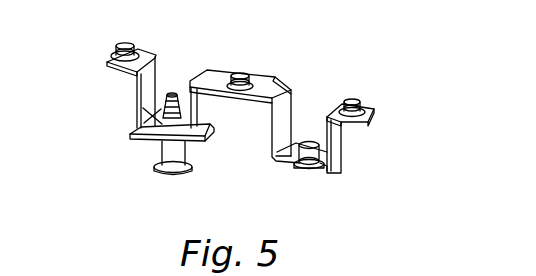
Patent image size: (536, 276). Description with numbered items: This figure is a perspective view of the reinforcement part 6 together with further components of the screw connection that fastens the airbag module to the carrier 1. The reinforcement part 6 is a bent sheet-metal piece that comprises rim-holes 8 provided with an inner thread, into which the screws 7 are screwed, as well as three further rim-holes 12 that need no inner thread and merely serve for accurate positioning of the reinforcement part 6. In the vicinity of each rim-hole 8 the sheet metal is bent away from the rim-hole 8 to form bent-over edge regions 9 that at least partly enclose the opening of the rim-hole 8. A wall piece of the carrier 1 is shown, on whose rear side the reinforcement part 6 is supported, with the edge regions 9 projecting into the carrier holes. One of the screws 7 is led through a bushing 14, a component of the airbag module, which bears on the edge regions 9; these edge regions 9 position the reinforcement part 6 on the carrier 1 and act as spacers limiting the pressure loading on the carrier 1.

The carrier 1 is at (208, 142).
The reinforcement part 6 is at (287, 104).
The screw 7 is at (177, 93).
The rim-hole 8 is at (143, 108).
The bent-over edge region 9 is at (303, 170).
The further rim-hole 12 is at (123, 47).
The bushing 14 is at (152, 147).